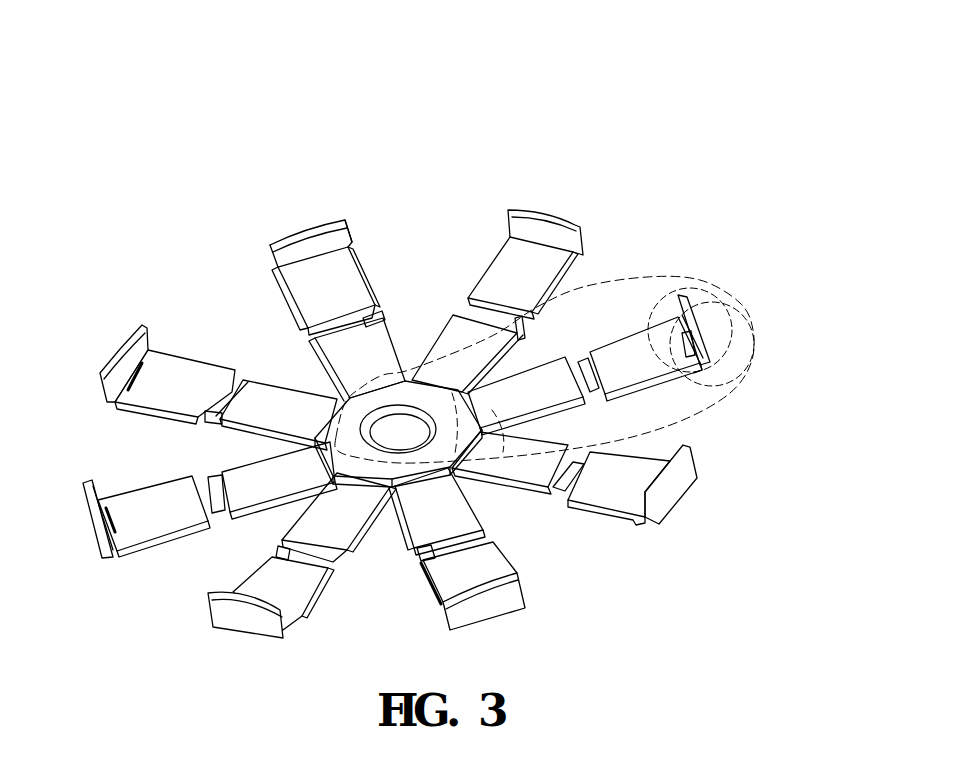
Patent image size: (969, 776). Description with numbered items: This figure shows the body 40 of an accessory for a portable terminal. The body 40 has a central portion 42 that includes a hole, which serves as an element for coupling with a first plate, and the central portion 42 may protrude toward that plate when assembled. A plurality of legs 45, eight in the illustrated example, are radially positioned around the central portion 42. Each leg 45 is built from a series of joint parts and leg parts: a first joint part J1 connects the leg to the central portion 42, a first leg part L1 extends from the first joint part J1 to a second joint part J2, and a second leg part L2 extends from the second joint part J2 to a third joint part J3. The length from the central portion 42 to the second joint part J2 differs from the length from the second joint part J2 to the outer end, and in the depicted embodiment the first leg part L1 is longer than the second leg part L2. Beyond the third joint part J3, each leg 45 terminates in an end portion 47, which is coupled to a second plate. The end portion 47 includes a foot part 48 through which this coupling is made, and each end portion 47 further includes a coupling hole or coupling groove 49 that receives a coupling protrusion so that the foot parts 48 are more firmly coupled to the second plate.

The body 40 is at (112, 107).
The central portion 42 is at (375, 380).
The leg 45 is at (653, 277).
The end portion 47 is at (730, 380).
The foot part 48 is at (692, 300).
The coupling hole or coupling groove 49 is at (682, 333).
The first joint part J1 is at (543, 487).
The second joint part J2 is at (590, 382).
The third joint part J3 is at (690, 371).
The first leg part L1 is at (552, 370).
The second leg part L2 is at (633, 368).